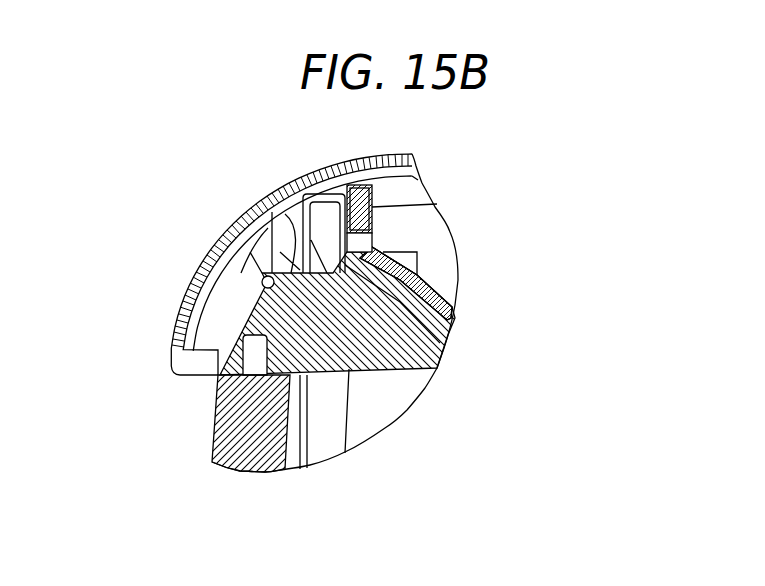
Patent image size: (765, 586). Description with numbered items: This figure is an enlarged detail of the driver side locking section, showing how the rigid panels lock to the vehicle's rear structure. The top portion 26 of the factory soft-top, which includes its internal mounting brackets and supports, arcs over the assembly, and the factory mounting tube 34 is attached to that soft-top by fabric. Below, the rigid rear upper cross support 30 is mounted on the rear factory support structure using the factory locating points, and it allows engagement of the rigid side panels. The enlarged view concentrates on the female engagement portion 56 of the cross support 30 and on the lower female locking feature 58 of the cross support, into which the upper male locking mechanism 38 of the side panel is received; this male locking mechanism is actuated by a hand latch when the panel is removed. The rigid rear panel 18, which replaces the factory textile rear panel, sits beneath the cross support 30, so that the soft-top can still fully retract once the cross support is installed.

The top portion of the factory soft-top 26 is at (203, 198).
The factory mounting tube 34 is at (222, 243).
The female engagement portion 56 is at (219, 305).
The lower female locking feature 58 is at (318, 350).
The upper male locking mechanism 38 is at (299, 331).
The rigid rear panel 18 is at (172, 459).
The rigid rear upper cross support 30 is at (380, 412).